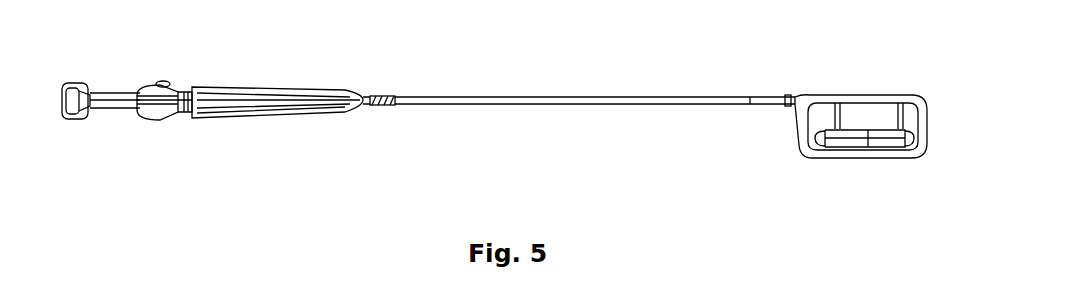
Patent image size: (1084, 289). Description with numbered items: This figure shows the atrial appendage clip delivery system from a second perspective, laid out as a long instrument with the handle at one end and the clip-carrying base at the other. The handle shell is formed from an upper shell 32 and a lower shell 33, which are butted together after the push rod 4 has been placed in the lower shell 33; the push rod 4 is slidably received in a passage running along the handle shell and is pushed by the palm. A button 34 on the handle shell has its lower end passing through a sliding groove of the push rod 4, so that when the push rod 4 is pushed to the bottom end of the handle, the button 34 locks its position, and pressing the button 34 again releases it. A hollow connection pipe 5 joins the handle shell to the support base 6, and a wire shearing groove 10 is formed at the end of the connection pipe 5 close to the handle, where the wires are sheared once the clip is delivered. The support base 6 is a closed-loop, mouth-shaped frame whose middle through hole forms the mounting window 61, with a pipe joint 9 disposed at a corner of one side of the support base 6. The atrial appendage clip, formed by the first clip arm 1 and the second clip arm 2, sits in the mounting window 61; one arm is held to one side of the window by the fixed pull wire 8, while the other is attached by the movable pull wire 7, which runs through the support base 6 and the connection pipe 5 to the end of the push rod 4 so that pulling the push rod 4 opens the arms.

The first clip arm 1 is at (873, 142).
The second clip arm 2 is at (852, 133).
The push rod 4 is at (112, 102).
The connection pipe 5 is at (628, 100).
The support base 6 is at (873, 95).
The mounting window 61 is at (912, 115).
The movable pull wire 7 is at (837, 135).
The fixed pull wire 8 is at (803, 125).
The pipe joint 9 is at (801, 112).
The wire shearing groove 10 is at (383, 97).
The upper shell 32 is at (227, 88).
The lower shell 33 is at (245, 113).
The button 34 is at (165, 82).